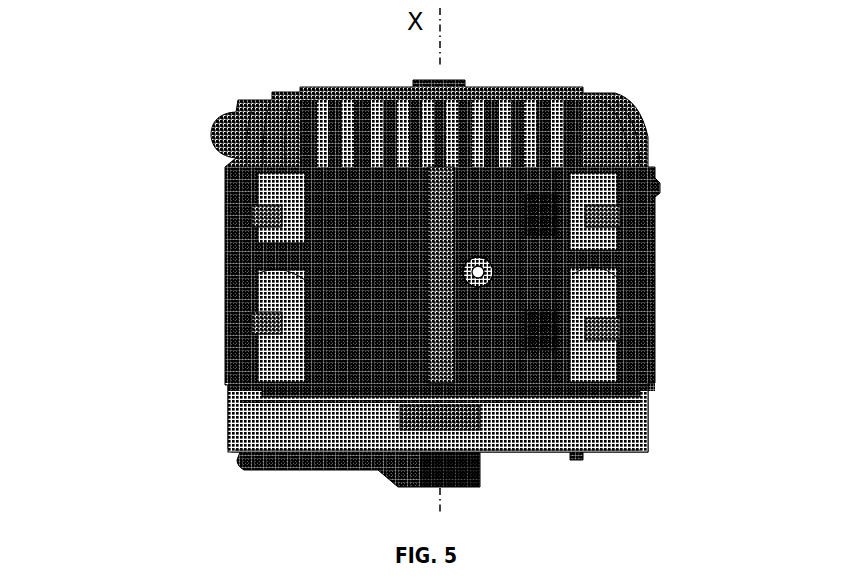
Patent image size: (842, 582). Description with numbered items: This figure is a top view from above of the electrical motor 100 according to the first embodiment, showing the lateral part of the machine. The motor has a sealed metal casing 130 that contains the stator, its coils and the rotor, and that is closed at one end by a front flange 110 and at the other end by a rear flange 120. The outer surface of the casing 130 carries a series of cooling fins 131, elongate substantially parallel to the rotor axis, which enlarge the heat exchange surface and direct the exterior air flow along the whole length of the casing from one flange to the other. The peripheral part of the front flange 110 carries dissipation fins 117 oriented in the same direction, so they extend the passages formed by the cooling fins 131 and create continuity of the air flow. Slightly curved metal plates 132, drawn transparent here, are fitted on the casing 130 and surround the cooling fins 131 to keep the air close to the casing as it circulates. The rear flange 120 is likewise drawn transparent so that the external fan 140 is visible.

The electrical motor 100 is at (398, 271).
The front flange 110 is at (487, 97).
The dissipation fins 117 is at (593, 125).
The rear flange 120 is at (599, 468).
The casing 130 is at (240, 298).
The cooling fins 131 is at (470, 322).
The metal plates 132 is at (523, 207).
The external fan 140 is at (330, 438).